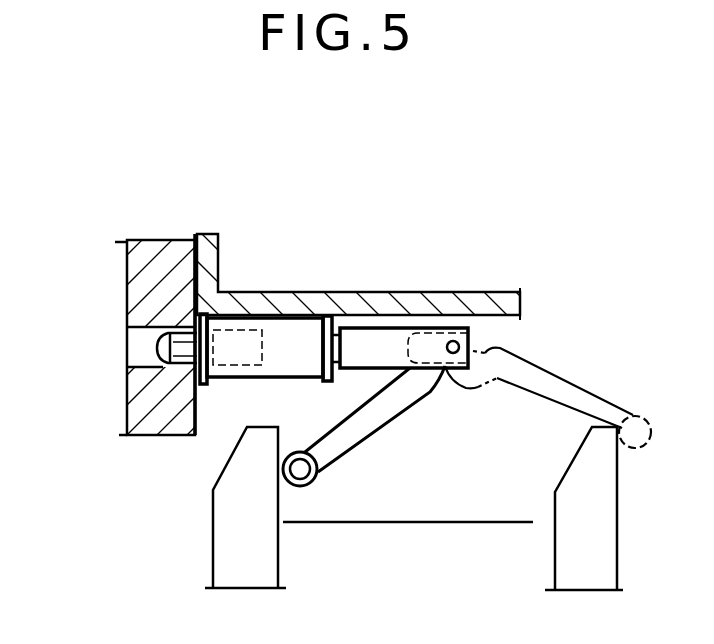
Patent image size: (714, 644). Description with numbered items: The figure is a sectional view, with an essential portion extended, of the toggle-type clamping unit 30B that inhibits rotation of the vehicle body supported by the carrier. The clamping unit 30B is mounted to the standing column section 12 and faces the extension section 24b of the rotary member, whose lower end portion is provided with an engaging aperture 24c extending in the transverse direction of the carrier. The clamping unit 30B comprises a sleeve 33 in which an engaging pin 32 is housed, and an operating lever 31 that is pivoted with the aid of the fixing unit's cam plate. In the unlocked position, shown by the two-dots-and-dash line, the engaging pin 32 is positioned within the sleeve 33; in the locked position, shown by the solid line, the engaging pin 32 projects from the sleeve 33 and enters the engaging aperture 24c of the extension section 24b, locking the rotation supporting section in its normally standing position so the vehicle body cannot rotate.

The extension section 24b is at (127, 272).
The engaging aperture 24c is at (128, 337).
The rear standing column section 12 is at (461, 292).
The sleeve 33 is at (276, 317).
The engaging pin 32 is at (226, 376).
The clamping unit 30B is at (420, 251).
The operating lever 31 is at (497, 380).